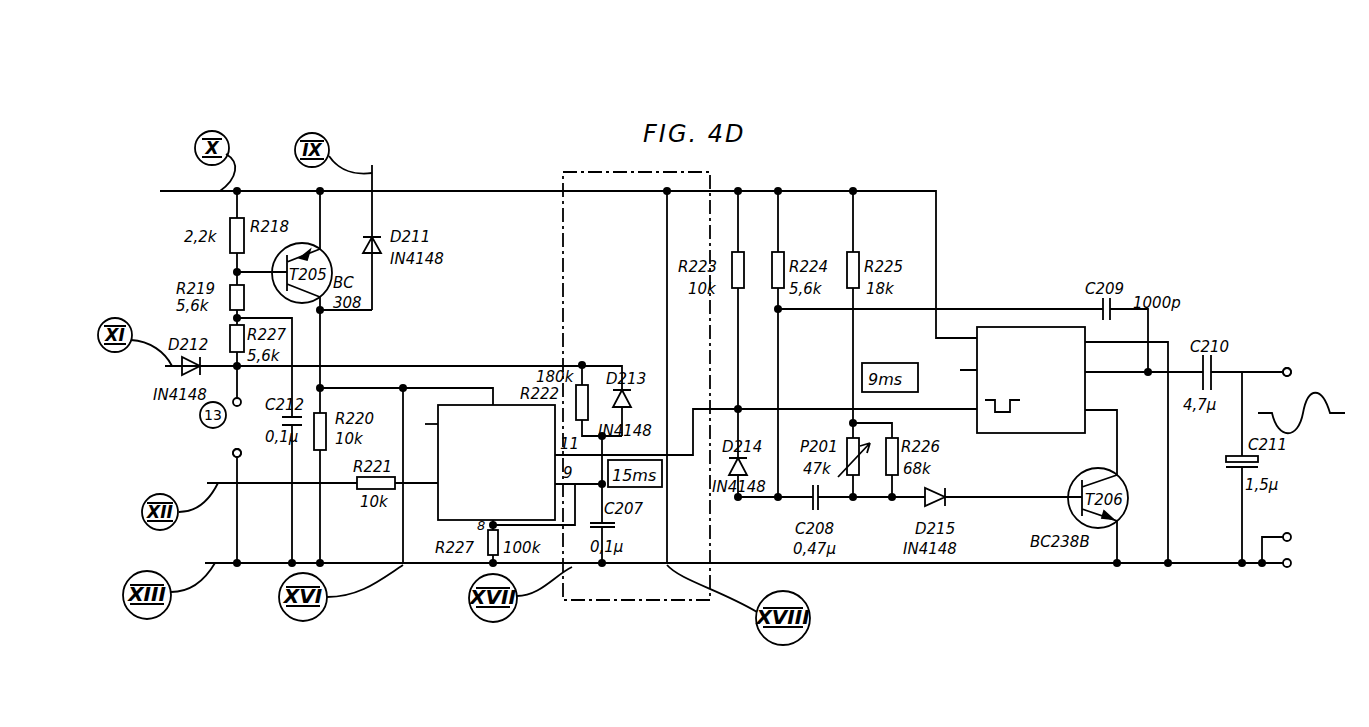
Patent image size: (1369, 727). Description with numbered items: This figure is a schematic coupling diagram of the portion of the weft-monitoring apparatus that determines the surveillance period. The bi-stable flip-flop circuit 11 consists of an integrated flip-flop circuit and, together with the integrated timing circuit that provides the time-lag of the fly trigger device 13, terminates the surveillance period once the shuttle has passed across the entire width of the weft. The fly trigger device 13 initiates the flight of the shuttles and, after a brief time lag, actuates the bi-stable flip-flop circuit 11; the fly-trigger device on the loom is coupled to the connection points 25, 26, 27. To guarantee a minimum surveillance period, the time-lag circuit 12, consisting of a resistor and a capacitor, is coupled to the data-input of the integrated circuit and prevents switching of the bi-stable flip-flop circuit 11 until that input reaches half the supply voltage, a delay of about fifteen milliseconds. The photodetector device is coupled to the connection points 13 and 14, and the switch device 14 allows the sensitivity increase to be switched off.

The bi-stable flip-flop circuit 11 is at (480, 333).
The time-lag circuit 12 is at (624, 600).
The fly trigger device with a time-lag 13 is at (1054, 276).
The switch device 14 is at (220, 447).
The connection point 25 is at (1306, 563).
The connection point 26 is at (1304, 372).
The connection point 27 is at (1306, 537).